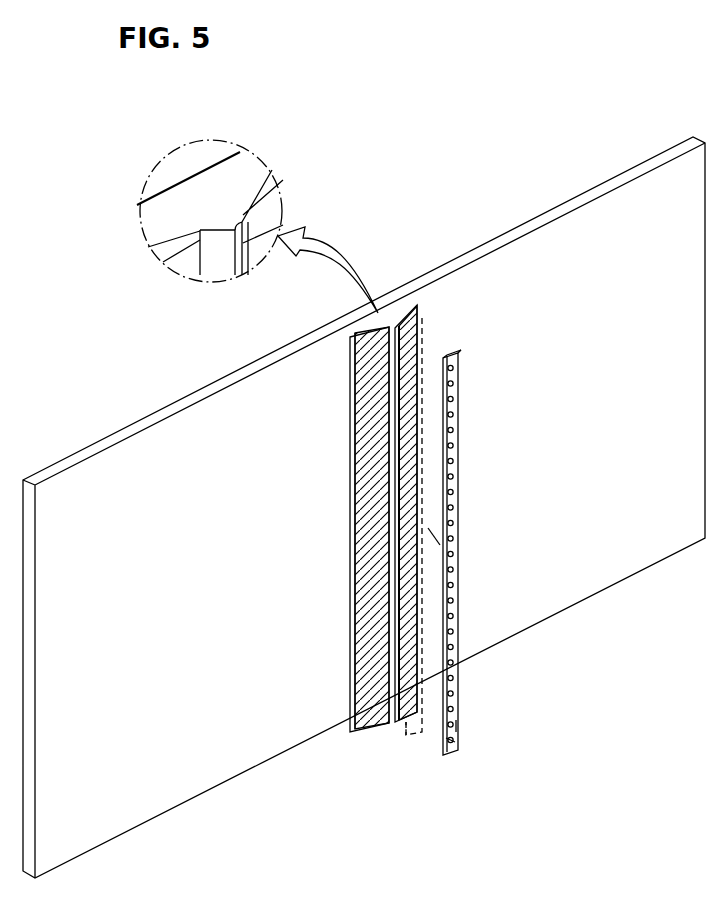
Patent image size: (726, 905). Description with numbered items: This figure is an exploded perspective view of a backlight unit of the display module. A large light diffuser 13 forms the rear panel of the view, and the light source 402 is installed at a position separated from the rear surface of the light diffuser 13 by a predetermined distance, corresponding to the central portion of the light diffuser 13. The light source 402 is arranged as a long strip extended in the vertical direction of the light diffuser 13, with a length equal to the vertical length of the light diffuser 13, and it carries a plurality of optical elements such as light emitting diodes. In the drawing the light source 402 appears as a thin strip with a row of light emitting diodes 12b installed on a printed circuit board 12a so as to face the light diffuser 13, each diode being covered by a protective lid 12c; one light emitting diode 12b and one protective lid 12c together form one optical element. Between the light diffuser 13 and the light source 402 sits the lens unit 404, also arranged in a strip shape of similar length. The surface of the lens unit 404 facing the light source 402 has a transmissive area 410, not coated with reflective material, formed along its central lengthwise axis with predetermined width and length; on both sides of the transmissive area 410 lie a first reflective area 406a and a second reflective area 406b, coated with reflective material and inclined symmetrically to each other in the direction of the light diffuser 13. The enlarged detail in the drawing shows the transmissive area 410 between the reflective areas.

The light diffuser 13 is at (160, 418).
The transmissive area 410 is at (233, 228).
The first reflective area 406a is at (358, 733).
The second reflective area 406b is at (418, 310).
The lens unit 404 is at (375, 735).
The light source 402 is at (493, 594).
The printed circuit board 12a is at (455, 693).
The light emitting diodes 12b is at (453, 740).
The protective lids 12c is at (458, 727).